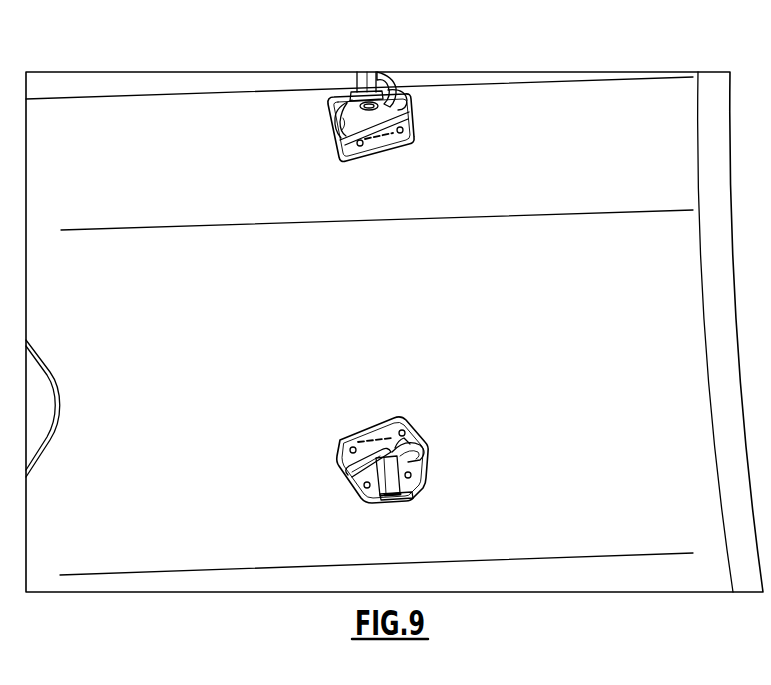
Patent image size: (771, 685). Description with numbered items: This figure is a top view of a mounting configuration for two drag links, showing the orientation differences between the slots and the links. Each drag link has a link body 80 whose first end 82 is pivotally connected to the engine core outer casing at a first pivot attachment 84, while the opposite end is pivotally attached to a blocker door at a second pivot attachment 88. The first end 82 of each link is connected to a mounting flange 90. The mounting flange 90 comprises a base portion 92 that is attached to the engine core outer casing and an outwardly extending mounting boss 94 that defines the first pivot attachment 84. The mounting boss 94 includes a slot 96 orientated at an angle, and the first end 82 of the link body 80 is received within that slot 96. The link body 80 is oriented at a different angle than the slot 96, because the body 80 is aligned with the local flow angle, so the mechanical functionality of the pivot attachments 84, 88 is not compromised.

The link body 80 is at (371, 70).
The first end 82 is at (348, 88).
The first pivot attachment 84 is at (368, 114).
The second pivot attachment 88 is at (395, 498).
The mounting flange 90 is at (418, 145).
The base portion 92 is at (387, 144).
The mounting boss 94 is at (393, 100).
The slot 96 is at (390, 92).